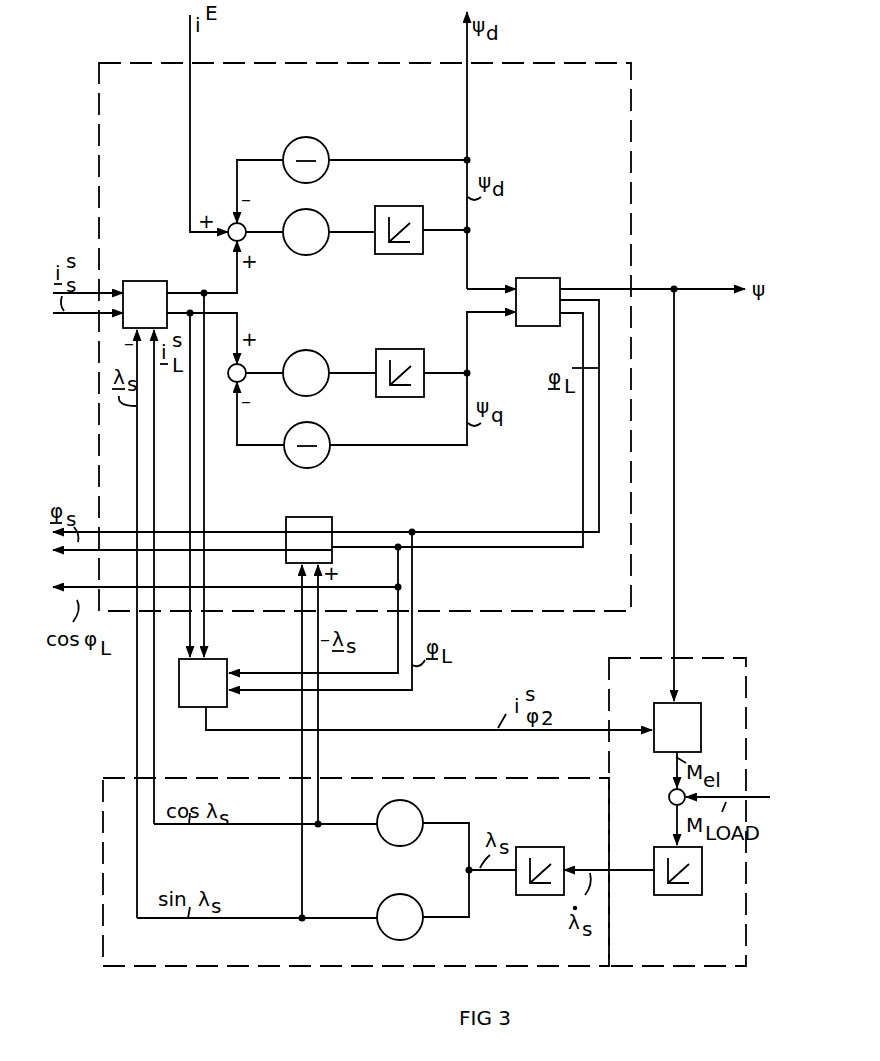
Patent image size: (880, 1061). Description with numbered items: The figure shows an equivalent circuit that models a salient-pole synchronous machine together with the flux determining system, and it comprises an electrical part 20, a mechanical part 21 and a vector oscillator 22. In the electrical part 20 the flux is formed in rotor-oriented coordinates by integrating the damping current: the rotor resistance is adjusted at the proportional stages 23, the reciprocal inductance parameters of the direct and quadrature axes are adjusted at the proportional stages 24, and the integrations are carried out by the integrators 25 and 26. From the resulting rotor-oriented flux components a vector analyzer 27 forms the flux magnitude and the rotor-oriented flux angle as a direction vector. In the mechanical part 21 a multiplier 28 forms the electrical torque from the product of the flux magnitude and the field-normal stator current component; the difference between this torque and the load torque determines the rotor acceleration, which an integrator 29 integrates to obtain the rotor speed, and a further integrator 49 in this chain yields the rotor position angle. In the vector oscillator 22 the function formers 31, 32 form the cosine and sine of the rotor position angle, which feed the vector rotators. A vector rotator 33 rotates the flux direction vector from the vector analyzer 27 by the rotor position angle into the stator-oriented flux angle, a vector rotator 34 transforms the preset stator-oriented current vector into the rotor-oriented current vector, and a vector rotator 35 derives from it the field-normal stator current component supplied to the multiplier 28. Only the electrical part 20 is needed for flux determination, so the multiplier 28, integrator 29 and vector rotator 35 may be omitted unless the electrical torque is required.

The electrical part 20 is at (331, 62).
The mechanical part 21 is at (672, 966).
The vector oscillator 22 is at (318, 968).
The proportional stages 23 is at (323, 214).
The proportional stages 24 is at (317, 139).
The integrator 25 is at (402, 206).
The integrator 26 is at (400, 349).
The vector analyzer 27 is at (539, 278).
The multiplier 28 is at (701, 727).
The integrator 29 is at (684, 895).
The function former 31 is at (419, 807).
The function former 32 is at (418, 904).
The vector rotator 33 is at (289, 517).
The vector rotator 34 is at (145, 281).
The vector rotator 35 is at (222, 660).
The integrator 49 is at (623, 871).